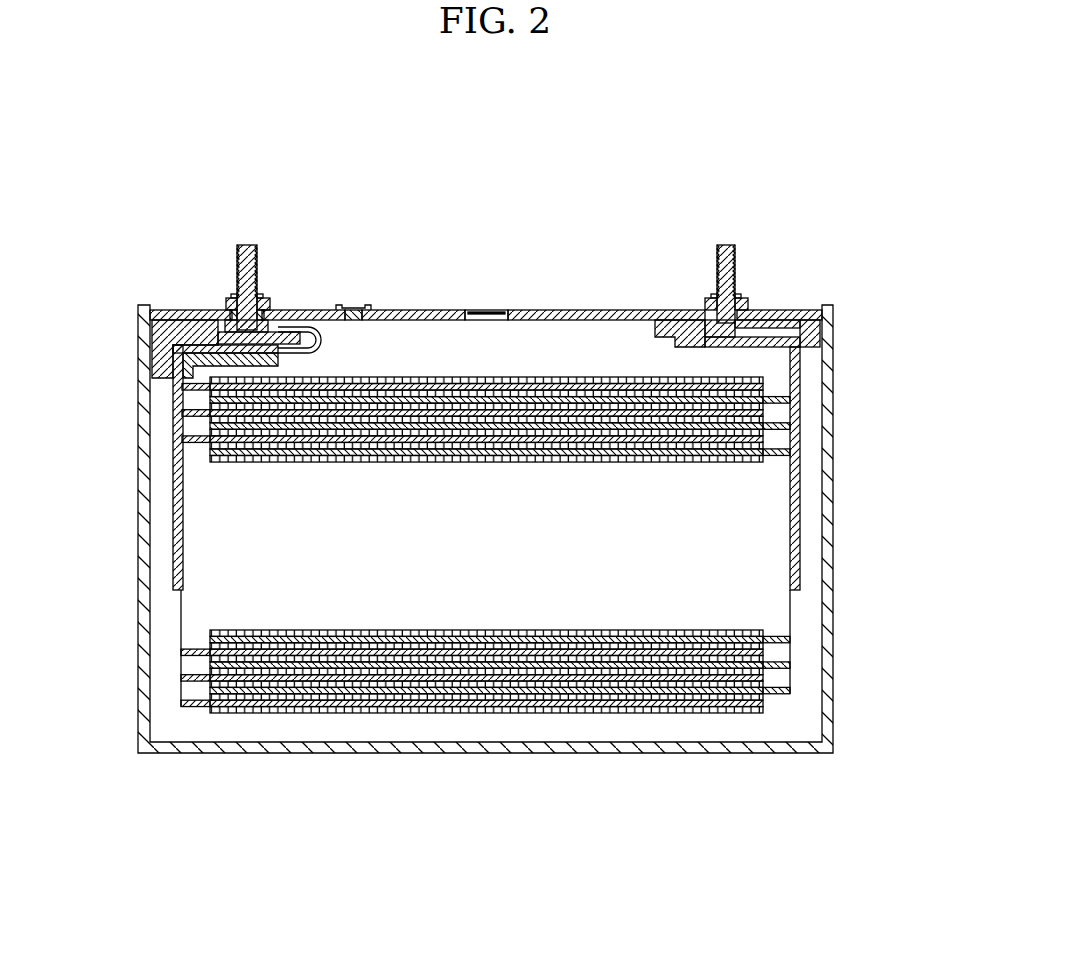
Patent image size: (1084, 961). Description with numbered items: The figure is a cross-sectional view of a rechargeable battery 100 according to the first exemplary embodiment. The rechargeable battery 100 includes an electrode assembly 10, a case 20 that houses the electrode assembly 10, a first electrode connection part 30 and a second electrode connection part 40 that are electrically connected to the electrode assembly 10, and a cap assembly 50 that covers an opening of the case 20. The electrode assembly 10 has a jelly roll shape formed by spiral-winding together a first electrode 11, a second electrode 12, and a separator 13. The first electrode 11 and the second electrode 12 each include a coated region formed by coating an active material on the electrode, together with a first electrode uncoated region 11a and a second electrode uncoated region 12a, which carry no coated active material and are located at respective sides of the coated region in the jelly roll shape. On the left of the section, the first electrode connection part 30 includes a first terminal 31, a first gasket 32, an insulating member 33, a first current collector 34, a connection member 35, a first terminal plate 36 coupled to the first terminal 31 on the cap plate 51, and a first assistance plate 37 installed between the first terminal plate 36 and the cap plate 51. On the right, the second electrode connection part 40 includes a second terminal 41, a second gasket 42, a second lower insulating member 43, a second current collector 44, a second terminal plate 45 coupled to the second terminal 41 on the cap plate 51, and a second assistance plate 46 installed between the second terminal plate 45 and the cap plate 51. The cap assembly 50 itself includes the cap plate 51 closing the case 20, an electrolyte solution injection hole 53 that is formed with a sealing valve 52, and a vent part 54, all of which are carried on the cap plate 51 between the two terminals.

The rechargeable battery 100 is at (500, 161).
The electrode assembly 10 is at (605, 597).
The first electrode 11 is at (311, 703).
The first electrode uncoated region 11a is at (183, 707).
The second electrode 12 is at (363, 686).
The second electrode uncoated region 12a is at (776, 695).
The separator 13 is at (483, 688).
The case 20 is at (829, 461).
The first electrode connection part 30 is at (162, 899).
The first terminal 31 is at (243, 245).
The first gasket 32 is at (218, 317).
The insulating member 33 is at (302, 330).
The first current collector 34 is at (163, 338).
The connection member 35 is at (322, 343).
The first terminal plate 36 is at (229, 296).
The first assistance plate 37 is at (271, 300).
The second electrode connection part 40 is at (465, 899).
The second terminal 41 is at (725, 245).
The second gasket 42 is at (692, 320).
The second lower insulating member 43 is at (815, 334).
The second current collector 44 is at (798, 378).
The second terminal plate 45 is at (741, 296).
The second assistance plate 46 is at (750, 302).
The cap assembly 50 is at (700, 899).
The cap plate 51 is at (545, 309).
The sealing valve 52 is at (339, 307).
The electrolyte solution injection hole 53 is at (354, 319).
The vent part 54 is at (487, 309).